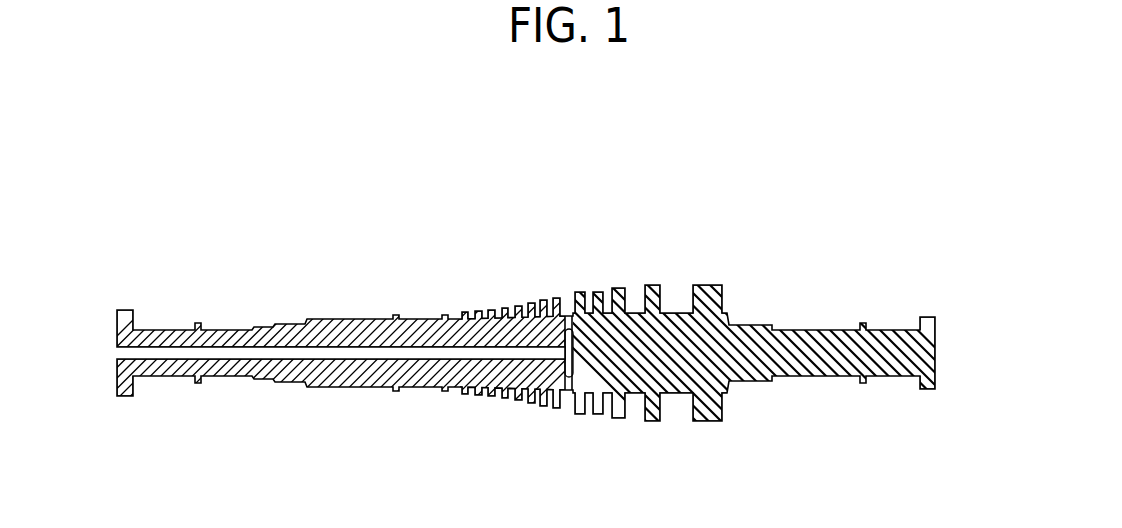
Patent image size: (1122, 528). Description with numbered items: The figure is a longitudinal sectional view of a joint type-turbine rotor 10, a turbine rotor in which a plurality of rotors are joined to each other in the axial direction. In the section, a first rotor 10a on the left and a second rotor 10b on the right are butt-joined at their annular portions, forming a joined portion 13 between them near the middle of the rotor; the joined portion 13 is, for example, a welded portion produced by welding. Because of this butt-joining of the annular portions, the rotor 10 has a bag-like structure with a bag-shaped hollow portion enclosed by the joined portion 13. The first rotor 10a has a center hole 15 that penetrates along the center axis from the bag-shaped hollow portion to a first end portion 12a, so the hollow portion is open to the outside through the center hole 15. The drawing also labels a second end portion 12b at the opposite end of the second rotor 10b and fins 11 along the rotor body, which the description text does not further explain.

The joint type-turbine rotor 10 is at (530, 303).
The first rotor 10a is at (339, 343).
The second rotor 10b is at (761, 336).
The fins 11 is at (615, 410).
The first end portion 12a is at (118, 363).
The right end flange 12b is at (937, 360).
The joined portion 13 is at (567, 318).
The center hole 15 is at (285, 352).